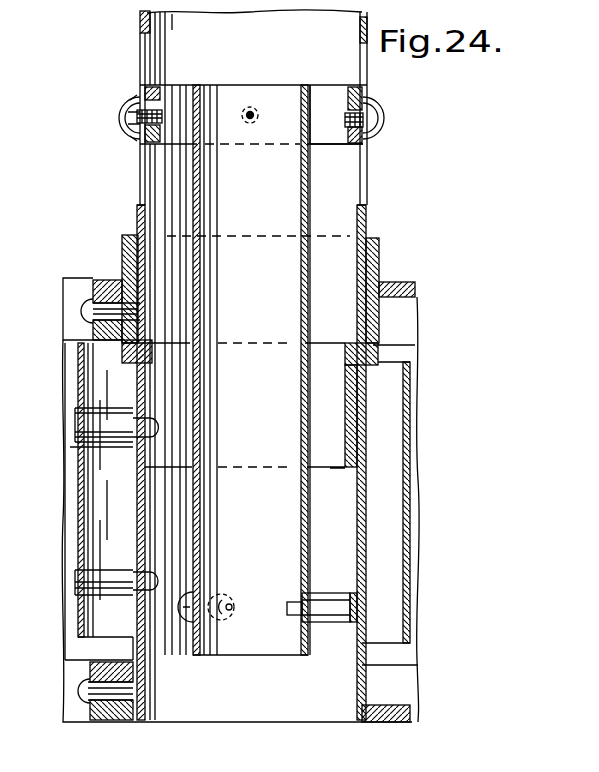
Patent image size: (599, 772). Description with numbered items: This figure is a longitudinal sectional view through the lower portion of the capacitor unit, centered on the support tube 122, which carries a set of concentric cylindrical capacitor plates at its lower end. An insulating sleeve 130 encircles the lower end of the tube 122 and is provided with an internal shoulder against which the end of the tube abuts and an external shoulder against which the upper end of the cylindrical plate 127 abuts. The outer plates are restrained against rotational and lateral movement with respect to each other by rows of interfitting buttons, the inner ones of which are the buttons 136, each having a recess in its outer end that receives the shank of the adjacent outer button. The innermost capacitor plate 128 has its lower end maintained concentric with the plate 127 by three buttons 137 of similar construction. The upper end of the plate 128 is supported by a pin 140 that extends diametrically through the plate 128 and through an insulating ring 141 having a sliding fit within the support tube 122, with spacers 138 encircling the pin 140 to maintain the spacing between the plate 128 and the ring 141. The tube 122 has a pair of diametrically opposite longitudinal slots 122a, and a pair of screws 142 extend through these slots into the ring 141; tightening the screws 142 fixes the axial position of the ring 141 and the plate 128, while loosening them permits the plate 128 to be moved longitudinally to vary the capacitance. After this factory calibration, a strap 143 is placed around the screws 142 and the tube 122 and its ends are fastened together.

The support tube 122 is at (367, 228).
The longitudinal slots 122a is at (140, 202).
The cylindrical plate 127 is at (356, 698).
The innermost capacitor plate 128 is at (300, 540).
The insulating sleeve 130 is at (382, 258).
The interfitting buttons 136 is at (92, 458).
The buttons 137 is at (322, 622).
The spacers 138 is at (248, 110).
The pin 140 is at (253, 108).
The insulating ring 141 is at (328, 138).
The screws 142 is at (131, 104).
The strap 143 is at (127, 128).